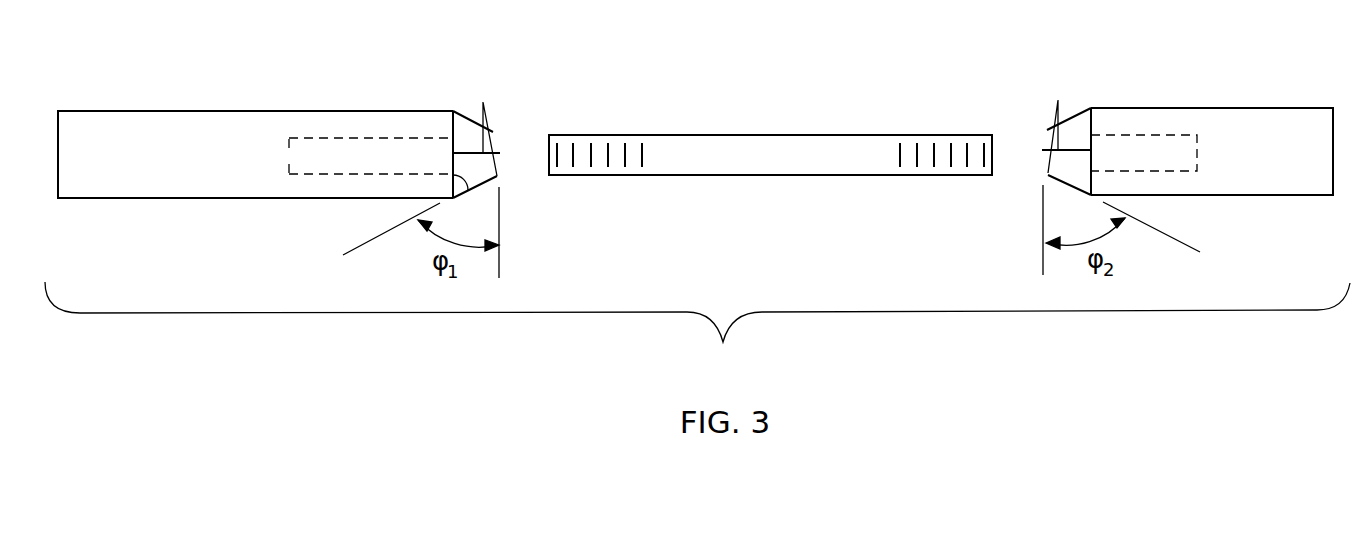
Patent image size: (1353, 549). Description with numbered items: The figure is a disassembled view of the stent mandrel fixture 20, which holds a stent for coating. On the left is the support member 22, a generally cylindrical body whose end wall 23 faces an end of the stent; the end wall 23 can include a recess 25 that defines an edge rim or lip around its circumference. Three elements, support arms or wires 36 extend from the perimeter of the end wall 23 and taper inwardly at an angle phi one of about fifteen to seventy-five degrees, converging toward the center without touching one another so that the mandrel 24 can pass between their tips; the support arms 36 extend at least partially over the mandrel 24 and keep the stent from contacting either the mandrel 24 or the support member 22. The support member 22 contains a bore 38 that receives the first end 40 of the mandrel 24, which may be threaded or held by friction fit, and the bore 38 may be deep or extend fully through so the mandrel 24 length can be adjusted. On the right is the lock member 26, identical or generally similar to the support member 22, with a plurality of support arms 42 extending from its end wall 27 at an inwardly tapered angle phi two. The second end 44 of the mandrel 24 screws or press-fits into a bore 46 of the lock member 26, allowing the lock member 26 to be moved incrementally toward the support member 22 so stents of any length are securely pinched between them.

The stent mandrel fixture 20 is at (697, 332).
The support member 22 is at (219, 136).
The end wall 23 is at (453, 111).
The mandrel 24 is at (717, 155).
The recess 25 is at (468, 190).
The lock member 26 is at (1290, 130).
The end wall 27 is at (1091, 108).
The support arms 36 is at (485, 124).
The bore 38 is at (365, 147).
The first end 40 is at (583, 158).
The support arms 42 is at (1058, 123).
The second end 44 is at (960, 158).
The bore 46 is at (1177, 142).